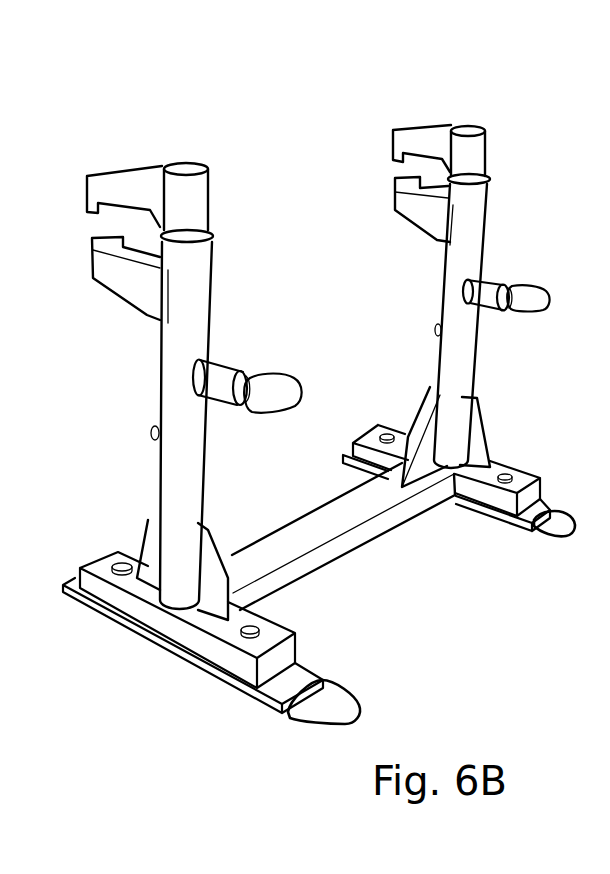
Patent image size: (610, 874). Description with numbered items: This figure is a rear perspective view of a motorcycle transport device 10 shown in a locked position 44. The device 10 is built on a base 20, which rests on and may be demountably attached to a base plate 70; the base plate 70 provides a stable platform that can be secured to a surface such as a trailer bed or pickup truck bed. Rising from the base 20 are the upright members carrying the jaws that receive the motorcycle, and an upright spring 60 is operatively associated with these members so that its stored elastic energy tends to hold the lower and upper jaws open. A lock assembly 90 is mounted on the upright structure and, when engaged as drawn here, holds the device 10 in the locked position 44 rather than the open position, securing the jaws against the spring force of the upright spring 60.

The motorcycle transport device 10 is at (125, 123).
The locked position 44 is at (327, 75).
The upright spring 60 is at (171, 347).
The lock assembly 90 is at (523, 300).
The base plate 70 is at (540, 498).
The base 20 is at (330, 551).